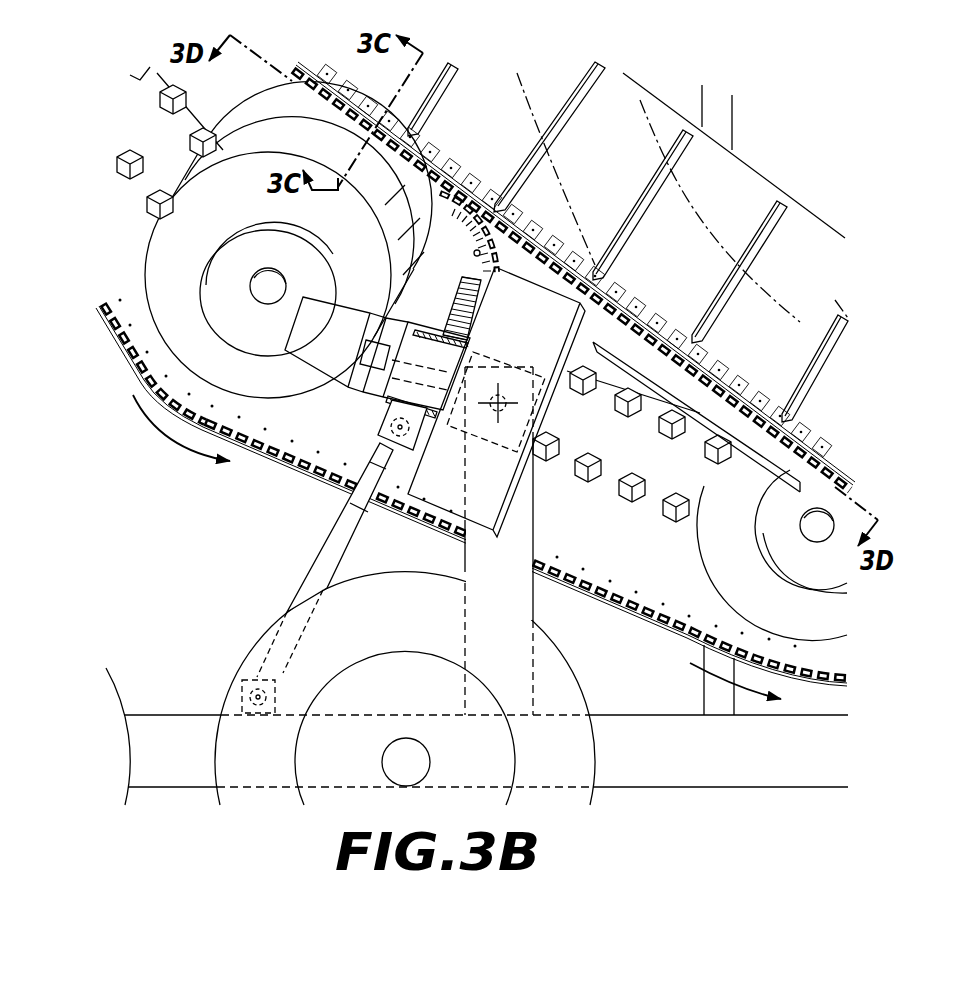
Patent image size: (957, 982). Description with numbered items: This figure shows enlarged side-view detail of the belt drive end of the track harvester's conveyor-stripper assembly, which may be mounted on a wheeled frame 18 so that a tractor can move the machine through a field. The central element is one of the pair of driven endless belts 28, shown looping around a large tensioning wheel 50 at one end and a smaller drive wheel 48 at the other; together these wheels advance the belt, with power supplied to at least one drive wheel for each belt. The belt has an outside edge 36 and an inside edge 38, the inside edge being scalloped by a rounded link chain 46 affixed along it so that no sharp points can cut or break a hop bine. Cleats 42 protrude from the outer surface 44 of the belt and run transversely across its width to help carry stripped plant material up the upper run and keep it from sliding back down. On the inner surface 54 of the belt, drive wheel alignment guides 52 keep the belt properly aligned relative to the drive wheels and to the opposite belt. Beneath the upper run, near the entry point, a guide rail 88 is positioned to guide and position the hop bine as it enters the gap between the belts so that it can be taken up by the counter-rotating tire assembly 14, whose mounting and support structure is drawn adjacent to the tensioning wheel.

The counter-rotating tire assembly 14 is at (457, 478).
The wheeled frame 18 is at (627, 732).
The driven endless belt 28 is at (632, 105).
The outside edge 36 is at (758, 165).
The inside edge 38 is at (134, 352).
The cleats 42 is at (775, 222).
The outer surface 44 is at (616, 166).
The link chain 46 is at (651, 625).
The drive wheels 48 is at (800, 612).
The tensioning wheels 50 is at (178, 256).
The drive wheel alignment guides 52 is at (126, 172).
The inner surface 54 is at (631, 556).
The guide rails 88 is at (760, 455).